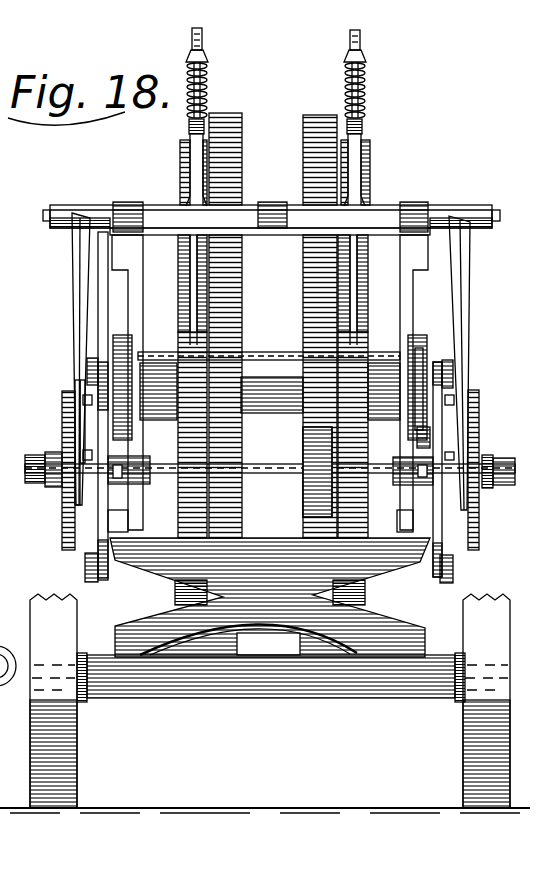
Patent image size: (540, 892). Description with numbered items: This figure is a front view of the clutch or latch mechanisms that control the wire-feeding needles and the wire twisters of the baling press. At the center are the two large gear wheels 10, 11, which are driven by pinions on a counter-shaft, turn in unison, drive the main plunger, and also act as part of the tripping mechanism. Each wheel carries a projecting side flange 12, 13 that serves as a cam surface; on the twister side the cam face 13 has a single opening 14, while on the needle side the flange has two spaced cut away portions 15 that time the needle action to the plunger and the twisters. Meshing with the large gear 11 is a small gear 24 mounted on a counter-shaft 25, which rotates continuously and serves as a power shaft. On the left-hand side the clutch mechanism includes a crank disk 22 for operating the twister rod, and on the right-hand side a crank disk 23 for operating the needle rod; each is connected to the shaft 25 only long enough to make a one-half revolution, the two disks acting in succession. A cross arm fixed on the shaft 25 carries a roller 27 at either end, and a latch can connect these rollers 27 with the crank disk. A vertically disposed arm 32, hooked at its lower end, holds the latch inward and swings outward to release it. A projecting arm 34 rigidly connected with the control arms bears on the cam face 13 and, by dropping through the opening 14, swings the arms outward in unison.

The large gear wheel 10 is at (240, 268).
The large gear wheel 11 is at (303, 286).
The projecting side flange 12 is at (184, 270).
The projecting side flange 13 is at (371, 186).
The opening 14 is at (371, 156).
The cut away portions 15 is at (180, 150).
The crank disk 22 is at (480, 426).
The crank disk 23 is at (62, 424).
The small gear 24 is at (306, 492).
The counter-shaft 25 is at (268, 466).
The roller 27 is at (85, 568).
The arm 32 is at (77, 312).
The projecting arm 34 is at (188, 131).